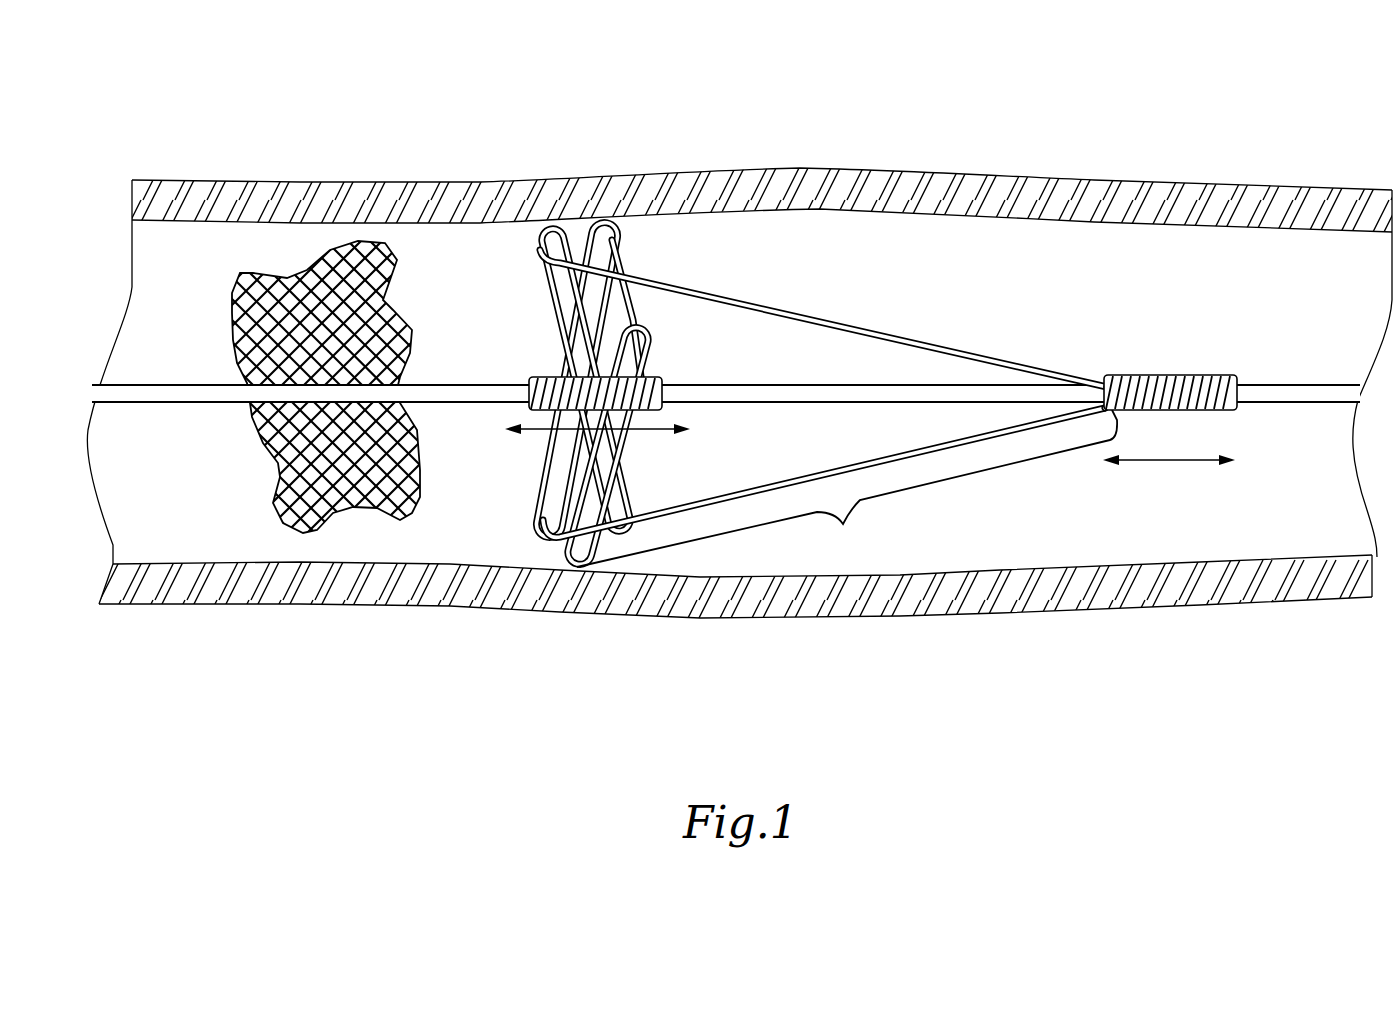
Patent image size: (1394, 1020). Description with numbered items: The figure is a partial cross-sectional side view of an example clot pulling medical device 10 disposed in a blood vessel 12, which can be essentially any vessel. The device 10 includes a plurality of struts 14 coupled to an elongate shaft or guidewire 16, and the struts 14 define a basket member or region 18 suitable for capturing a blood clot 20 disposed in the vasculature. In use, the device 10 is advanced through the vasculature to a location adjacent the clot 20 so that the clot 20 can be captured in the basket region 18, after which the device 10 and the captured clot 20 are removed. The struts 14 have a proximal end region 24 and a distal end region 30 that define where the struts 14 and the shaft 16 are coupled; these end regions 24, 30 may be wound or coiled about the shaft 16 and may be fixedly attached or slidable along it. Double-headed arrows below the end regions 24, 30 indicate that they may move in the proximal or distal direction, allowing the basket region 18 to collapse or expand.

The clot pulling medical device 10 is at (493, 317).
The blood vessel 12 is at (735, 190).
The struts 14 is at (965, 440).
The elongate shaft or guidewire 16 is at (153, 393).
The basket member or region 18 is at (830, 487).
The blood clot 20 is at (317, 298).
The proximal end region 24 is at (543, 367).
The distal end region 30 is at (1167, 370).